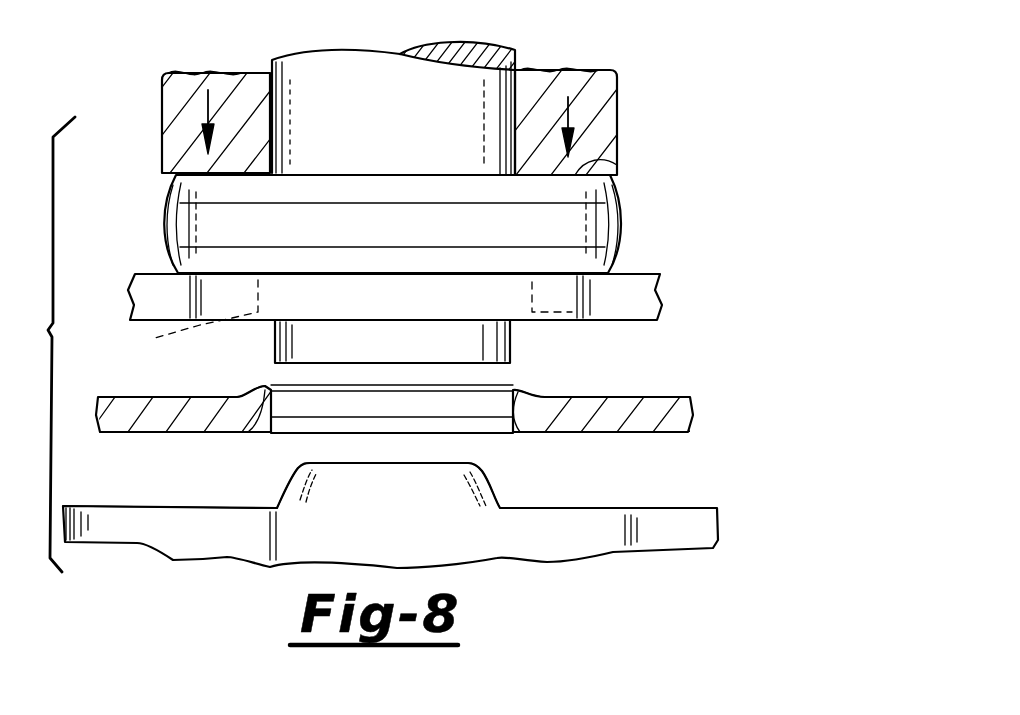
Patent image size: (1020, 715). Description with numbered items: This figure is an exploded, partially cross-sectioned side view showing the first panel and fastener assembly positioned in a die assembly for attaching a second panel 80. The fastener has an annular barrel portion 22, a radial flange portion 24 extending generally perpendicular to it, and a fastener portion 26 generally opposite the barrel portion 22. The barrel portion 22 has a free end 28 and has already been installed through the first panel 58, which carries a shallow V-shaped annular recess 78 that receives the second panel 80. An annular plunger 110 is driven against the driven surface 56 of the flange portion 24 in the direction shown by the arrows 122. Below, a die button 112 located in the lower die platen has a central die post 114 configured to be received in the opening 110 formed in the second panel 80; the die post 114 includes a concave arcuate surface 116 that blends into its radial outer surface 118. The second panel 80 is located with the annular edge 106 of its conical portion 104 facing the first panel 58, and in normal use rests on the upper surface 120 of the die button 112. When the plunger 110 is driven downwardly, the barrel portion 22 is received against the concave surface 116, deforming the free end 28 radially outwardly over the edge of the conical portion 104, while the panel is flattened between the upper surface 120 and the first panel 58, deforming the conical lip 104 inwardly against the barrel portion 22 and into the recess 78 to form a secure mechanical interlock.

The barrel portion 22 is at (392, 352).
The radial flange portion 24 is at (391, 237).
The fastener portion 26 is at (392, 137).
The free end 28 is at (505, 369).
The driven surface 56 is at (617, 165).
The first panel 58 is at (637, 303).
The V-shaped annular recess 78 is at (345, 318).
The second panel 80 is at (650, 422).
The conical portion 104 is at (517, 398).
The annular edge 106 is at (266, 390).
The annular plunger 110 is at (596, 113).
The die button 112 is at (577, 535).
The central die post 114 is at (320, 492).
The concave arcuate surface 116 is at (487, 492).
The radial outer surface 118 is at (477, 466).
The upper surface 120 is at (130, 507).
The arrows 122 is at (208, 90).